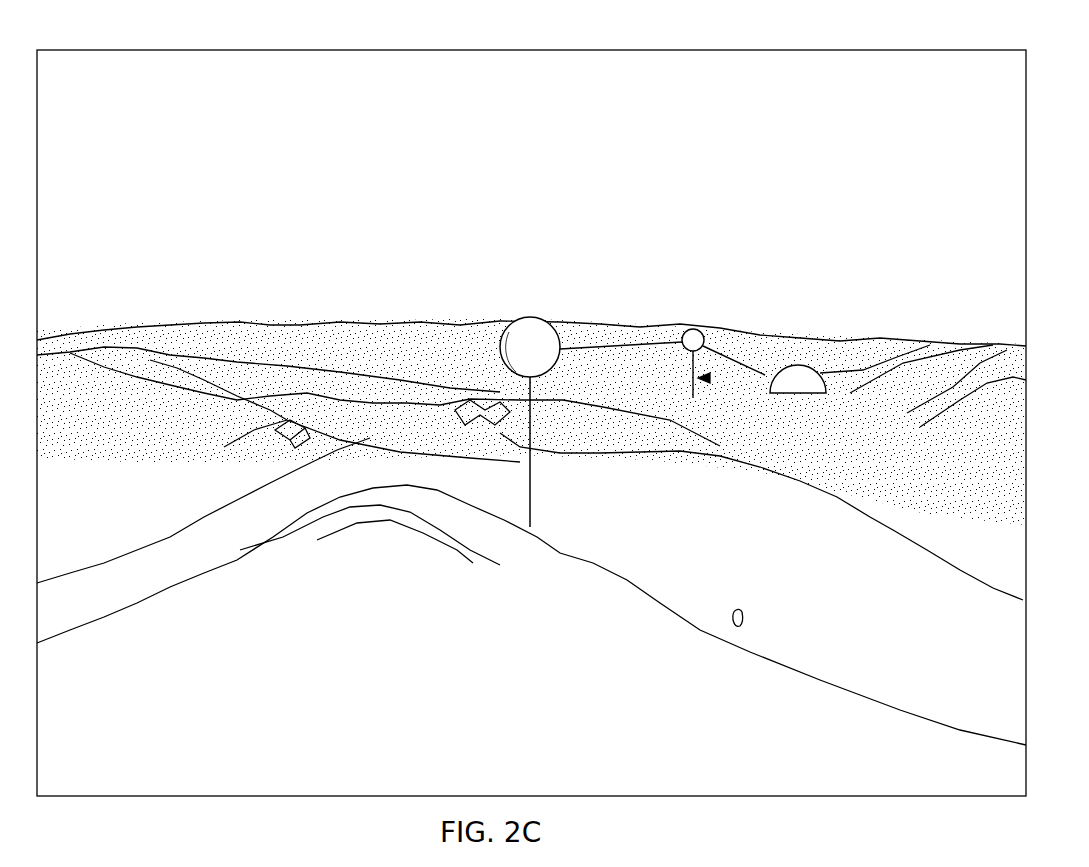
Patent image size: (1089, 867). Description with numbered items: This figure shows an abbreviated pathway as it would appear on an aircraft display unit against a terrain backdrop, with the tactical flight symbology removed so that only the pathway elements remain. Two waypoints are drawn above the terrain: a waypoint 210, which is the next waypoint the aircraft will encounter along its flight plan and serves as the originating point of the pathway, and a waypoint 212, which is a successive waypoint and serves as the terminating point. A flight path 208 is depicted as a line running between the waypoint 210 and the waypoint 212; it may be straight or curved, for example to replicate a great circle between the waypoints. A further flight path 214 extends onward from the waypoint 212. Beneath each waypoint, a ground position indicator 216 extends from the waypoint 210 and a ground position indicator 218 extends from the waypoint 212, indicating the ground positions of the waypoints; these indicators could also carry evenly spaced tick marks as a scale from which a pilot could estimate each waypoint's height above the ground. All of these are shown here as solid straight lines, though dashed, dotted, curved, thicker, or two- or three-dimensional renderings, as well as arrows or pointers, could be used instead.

The flight path 208 is at (597, 342).
The waypoint 210 is at (531, 314).
The waypoint 212 is at (693, 328).
The flight path 214 is at (740, 354).
The ground position indicator 216 is at (533, 476).
The ground position indicator 218 is at (762, 370).